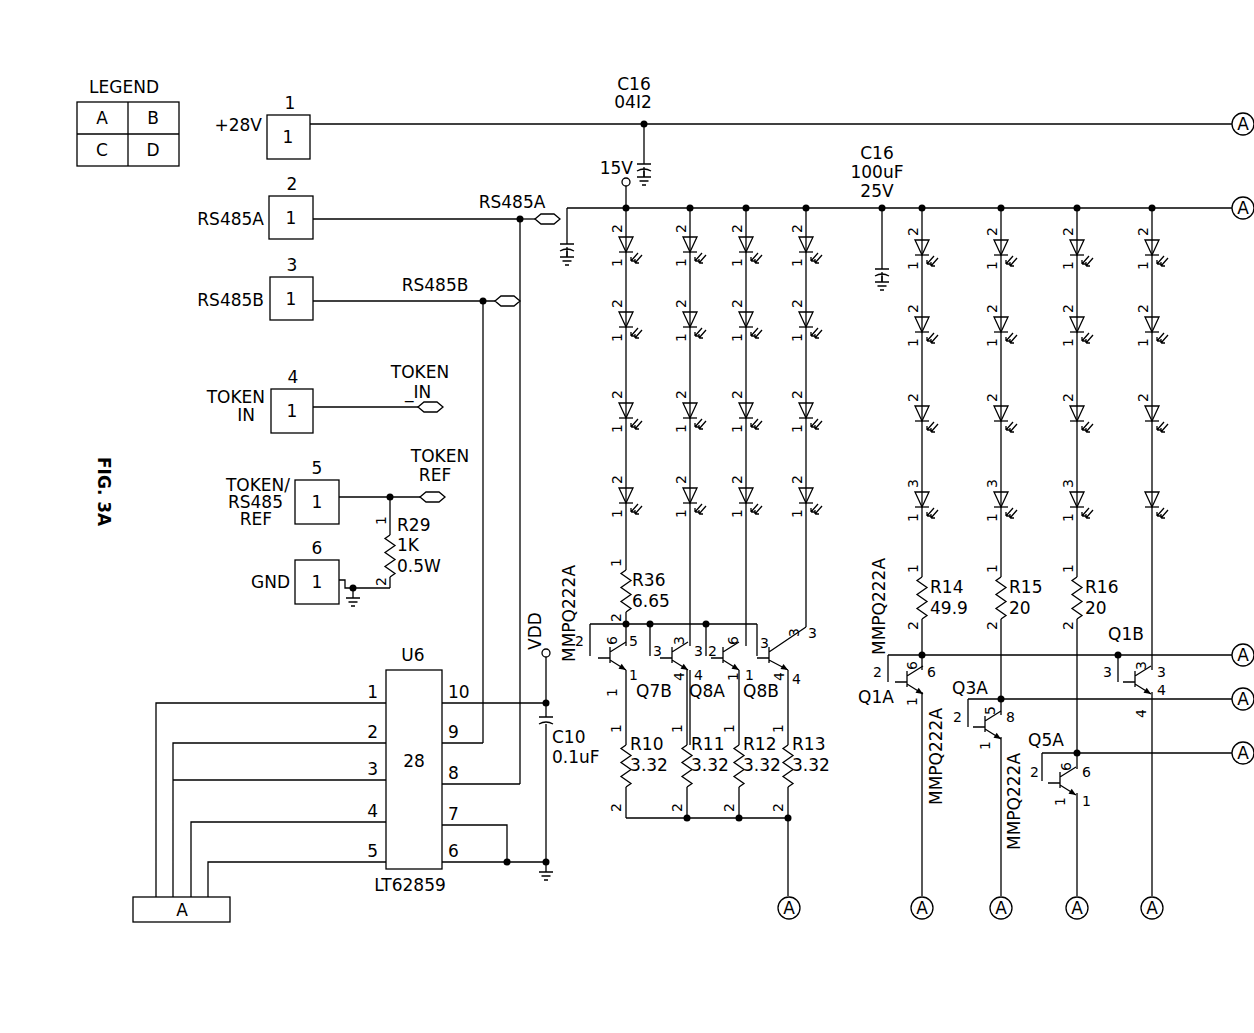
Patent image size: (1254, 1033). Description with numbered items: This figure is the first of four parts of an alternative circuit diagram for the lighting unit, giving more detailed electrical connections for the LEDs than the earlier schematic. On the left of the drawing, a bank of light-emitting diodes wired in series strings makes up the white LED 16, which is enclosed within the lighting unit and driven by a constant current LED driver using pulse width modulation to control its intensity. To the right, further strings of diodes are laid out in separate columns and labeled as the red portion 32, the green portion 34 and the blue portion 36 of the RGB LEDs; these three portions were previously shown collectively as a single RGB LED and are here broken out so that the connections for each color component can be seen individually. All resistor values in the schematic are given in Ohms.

The white LED 16 is at (862, 222).
The red portion of the RGB LEDs 32 is at (1050, 424).
The green portion of the RGB LEDs 34 is at (1014, 378).
The blue portion of the RGB LEDs 36 is at (1090, 378).